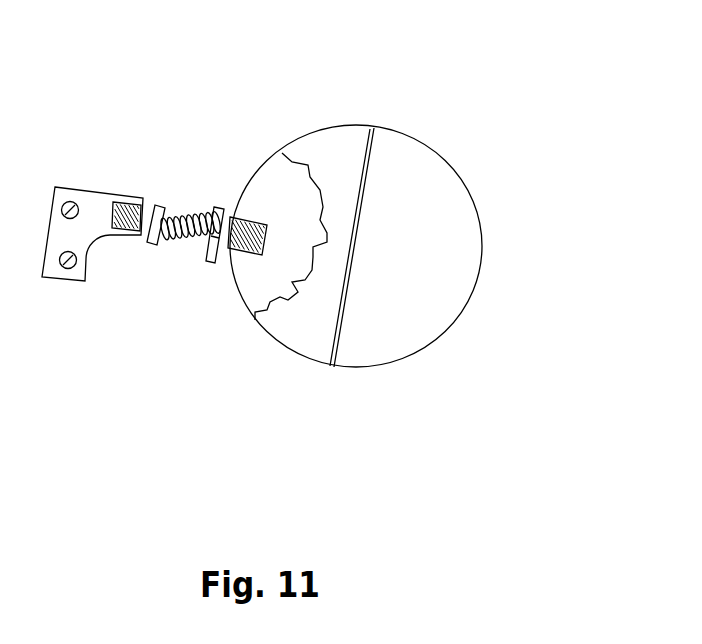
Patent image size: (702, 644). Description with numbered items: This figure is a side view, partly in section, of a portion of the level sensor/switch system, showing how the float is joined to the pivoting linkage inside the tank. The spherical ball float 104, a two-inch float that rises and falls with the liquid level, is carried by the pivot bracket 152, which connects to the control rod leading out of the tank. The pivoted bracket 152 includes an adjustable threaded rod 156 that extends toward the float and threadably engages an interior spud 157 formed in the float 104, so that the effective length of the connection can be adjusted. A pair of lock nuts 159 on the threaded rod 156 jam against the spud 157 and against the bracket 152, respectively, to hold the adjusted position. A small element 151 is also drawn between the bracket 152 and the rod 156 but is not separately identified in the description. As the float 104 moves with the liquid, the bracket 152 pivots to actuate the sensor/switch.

The ball float 104 is at (442, 207).
The stop block 151 is at (161, 211).
The pivot bracket 152 is at (90, 210).
The adjustable threaded rod 156 is at (173, 227).
The interior spud 157 is at (250, 221).
The lock nuts 159 is at (210, 262).